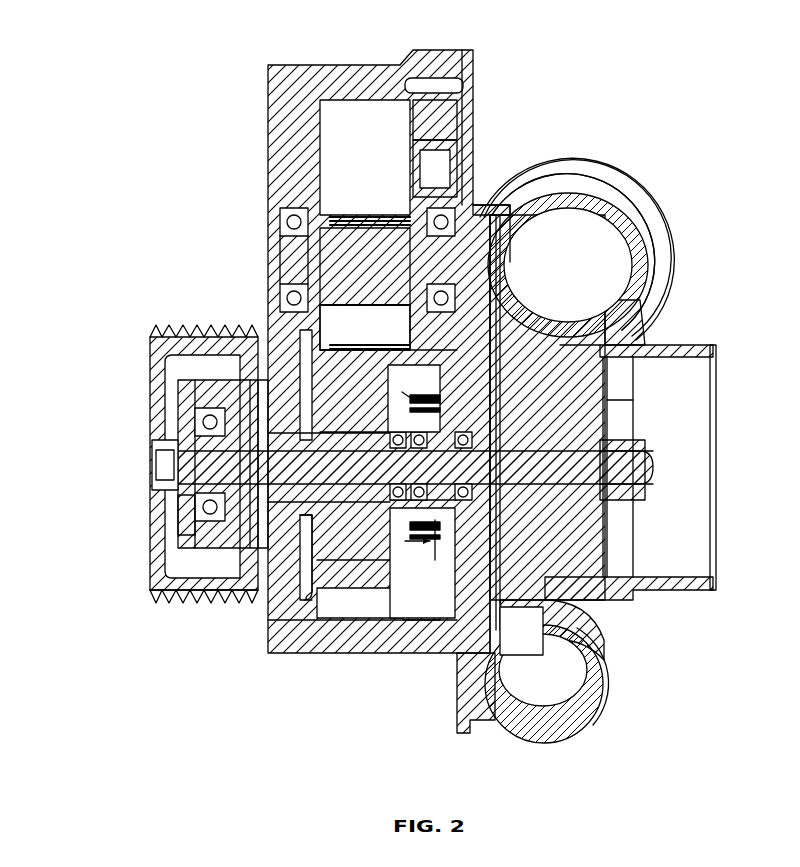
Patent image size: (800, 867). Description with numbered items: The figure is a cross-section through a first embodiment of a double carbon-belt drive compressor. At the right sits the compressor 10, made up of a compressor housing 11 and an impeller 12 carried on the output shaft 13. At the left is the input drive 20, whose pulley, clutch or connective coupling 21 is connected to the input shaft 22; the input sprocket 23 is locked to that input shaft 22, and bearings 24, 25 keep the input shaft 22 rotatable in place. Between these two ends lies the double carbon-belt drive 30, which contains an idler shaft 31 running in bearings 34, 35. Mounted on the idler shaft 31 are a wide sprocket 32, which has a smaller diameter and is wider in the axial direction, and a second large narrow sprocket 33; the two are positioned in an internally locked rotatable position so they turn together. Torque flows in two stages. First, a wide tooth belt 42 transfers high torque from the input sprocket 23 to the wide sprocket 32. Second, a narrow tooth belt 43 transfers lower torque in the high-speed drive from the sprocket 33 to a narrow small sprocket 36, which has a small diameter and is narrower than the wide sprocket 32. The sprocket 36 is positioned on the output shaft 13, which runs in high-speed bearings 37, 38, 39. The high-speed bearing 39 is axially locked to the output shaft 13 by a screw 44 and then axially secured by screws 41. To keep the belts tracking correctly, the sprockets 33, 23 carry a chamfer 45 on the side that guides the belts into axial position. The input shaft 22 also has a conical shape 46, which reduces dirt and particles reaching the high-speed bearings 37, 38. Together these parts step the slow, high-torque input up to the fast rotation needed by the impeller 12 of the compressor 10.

The compressor 10 is at (625, 162).
The compressor housing 11 is at (650, 245).
The impeller 12 is at (607, 427).
The output shaft 13 is at (655, 474).
The input drive 20 is at (138, 308).
The pulley, clutch or connective coupling 21 is at (193, 328).
The input shaft 22 is at (236, 415).
The input sprocket 23 is at (268, 653).
The bearing 24 is at (195, 518).
The bearing 25 is at (245, 600).
The double carbon-belt drive 30 is at (340, 52).
The idler shaft 31 is at (305, 255).
The wide sprocket 32 is at (335, 217).
The sprocket 33 is at (428, 145).
The bearing 34 is at (288, 215).
The bearing 35 is at (482, 203).
The narrow small sprocket 36 is at (440, 545).
The high-speed bearing 37 is at (355, 590).
The high-speed bearing 38 is at (322, 598).
The high-speed bearing 39 is at (192, 530).
The screws 41 is at (235, 427).
The wide tooth belt 42 is at (355, 320).
The narrow tooth belt 43 is at (603, 388).
The screw 44 is at (192, 440).
The chamfer 45 is at (446, 125).
The conical shape 46 is at (603, 417).